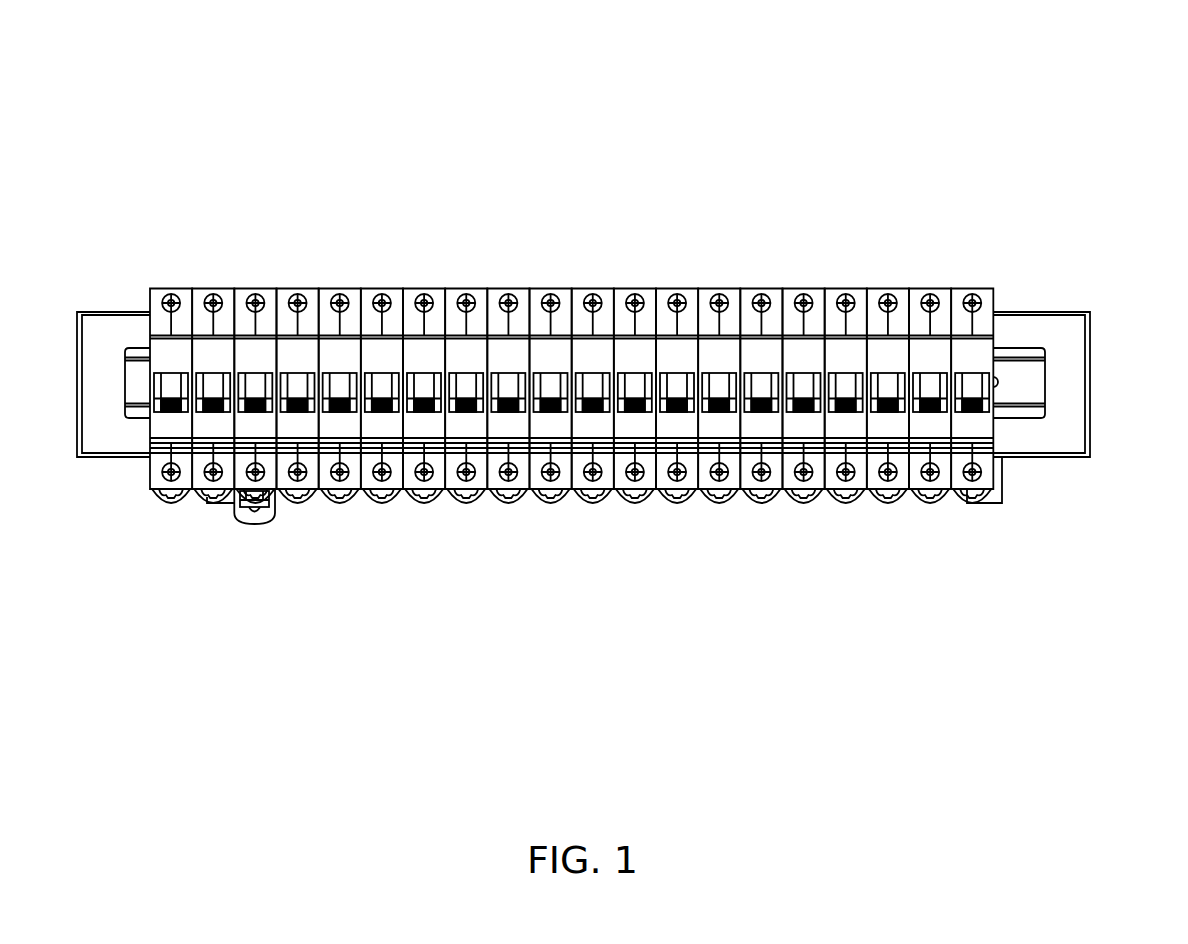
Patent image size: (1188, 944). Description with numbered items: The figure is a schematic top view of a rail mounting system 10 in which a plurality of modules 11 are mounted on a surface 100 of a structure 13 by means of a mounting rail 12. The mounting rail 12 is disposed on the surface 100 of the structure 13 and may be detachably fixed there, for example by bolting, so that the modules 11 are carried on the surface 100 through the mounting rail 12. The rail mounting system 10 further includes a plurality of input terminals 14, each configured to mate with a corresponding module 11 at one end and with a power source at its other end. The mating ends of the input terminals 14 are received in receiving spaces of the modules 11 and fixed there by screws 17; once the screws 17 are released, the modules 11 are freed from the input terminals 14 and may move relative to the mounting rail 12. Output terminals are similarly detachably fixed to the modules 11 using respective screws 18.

The rail mounting system 10 is at (194, 162).
The module 11 is at (873, 294).
The mounting rail 12 is at (1018, 356).
The structure 13 is at (1062, 437).
The input terminal 14 is at (258, 516).
The screw 17 is at (973, 481).
The screw 18 is at (676, 305).
The surface 100 is at (1073, 385).